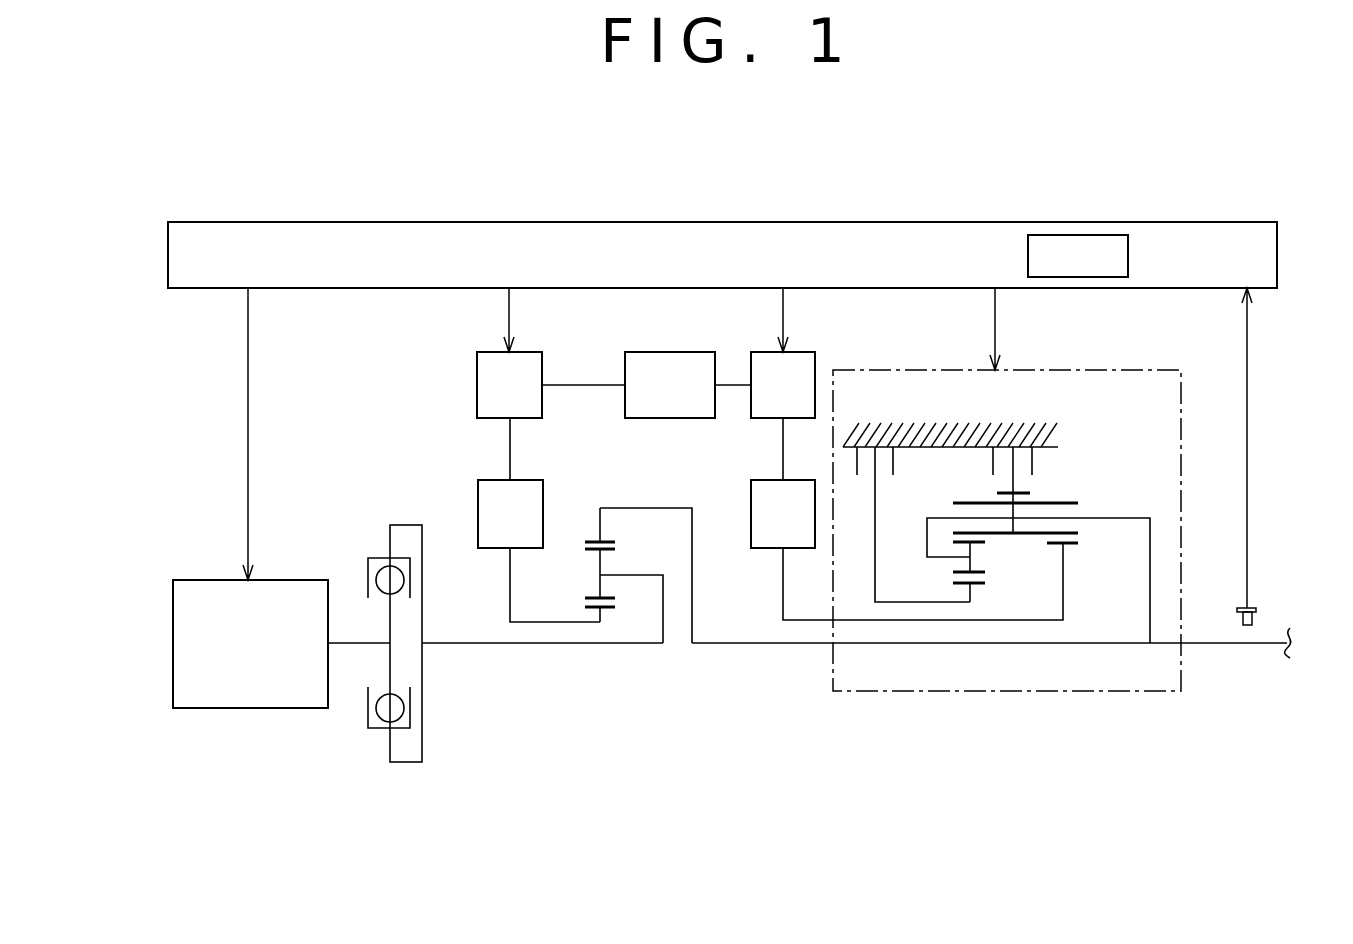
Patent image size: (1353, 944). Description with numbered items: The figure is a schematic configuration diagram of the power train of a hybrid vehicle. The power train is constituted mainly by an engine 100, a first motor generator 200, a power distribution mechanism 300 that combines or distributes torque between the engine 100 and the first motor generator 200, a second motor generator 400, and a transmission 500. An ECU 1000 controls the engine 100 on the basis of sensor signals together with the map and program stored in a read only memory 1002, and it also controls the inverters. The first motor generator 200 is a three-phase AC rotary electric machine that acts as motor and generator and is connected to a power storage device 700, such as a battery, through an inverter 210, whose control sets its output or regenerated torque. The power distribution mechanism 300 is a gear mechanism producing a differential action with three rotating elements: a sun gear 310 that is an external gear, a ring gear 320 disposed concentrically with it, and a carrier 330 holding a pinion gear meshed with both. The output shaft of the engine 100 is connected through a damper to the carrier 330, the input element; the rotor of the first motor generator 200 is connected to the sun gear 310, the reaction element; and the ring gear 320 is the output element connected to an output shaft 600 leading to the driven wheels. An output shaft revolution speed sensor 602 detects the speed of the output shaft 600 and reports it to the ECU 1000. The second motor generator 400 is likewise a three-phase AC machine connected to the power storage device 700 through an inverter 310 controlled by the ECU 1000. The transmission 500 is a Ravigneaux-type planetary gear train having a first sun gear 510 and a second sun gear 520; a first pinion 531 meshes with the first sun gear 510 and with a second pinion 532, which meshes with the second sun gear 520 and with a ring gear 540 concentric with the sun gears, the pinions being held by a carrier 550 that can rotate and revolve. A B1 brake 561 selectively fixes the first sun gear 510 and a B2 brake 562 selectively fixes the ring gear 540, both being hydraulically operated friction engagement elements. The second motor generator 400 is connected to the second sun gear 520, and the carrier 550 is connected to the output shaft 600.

The engine 100 is at (267, 708).
The first motor generator 200 is at (478, 498).
The inverter 210 is at (527, 352).
The power distribution mechanism 300 is at (583, 648).
The sun gear 310 is at (798, 352).
The ring gear 320 is at (593, 541).
The carrier 330 is at (630, 575).
The second motor generator 400 is at (767, 548).
The transmission 500 is at (1150, 370).
The first sun gear 510 is at (983, 585).
The second sun gear 520 is at (1068, 545).
The first pinion 531 is at (982, 565).
The second pinion 532 is at (975, 503).
The ring gear 540 is at (1025, 495).
The carrier 550 is at (1113, 518).
The B1 brake 561 is at (882, 460).
The B2 brake 562 is at (1020, 460).
The output shaft 600 is at (1233, 643).
The output shaft revolution speed sensor 602 is at (1253, 605).
The power storage device 700 is at (670, 352).
The ECU 1000 is at (660, 222).
The read only memory 1002 is at (1080, 235).